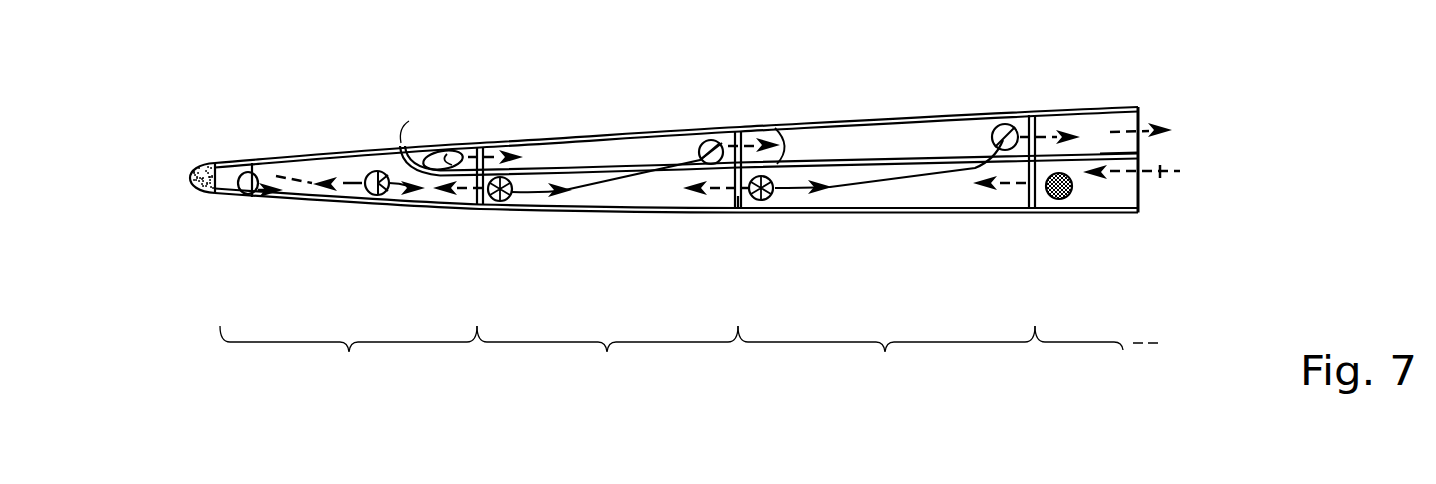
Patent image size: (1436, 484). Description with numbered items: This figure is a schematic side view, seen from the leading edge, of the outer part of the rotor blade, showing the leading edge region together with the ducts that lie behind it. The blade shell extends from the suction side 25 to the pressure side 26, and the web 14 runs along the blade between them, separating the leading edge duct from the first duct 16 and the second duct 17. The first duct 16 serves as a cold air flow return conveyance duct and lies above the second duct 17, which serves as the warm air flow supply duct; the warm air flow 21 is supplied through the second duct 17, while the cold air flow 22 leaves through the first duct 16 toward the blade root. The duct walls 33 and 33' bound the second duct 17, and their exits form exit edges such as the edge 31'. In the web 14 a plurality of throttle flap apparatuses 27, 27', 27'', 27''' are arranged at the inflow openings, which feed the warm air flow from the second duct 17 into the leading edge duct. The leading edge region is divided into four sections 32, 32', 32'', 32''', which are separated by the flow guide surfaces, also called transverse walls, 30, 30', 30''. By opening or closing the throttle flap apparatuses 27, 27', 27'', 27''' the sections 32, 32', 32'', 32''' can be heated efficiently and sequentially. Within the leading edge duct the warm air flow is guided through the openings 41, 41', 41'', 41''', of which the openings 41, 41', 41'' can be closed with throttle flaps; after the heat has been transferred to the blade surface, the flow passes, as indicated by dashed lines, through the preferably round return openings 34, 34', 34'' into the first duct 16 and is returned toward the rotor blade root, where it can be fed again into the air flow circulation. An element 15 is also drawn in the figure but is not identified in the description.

The web 14 is at (296, 193).
The spar / partition web 15 is at (921, 166).
The first duct 16 is at (892, 140).
The second duct 17 is at (950, 190).
The warm air flow 21 is at (1160, 178).
The cold air flow 22 is at (1147, 127).
The suction side 25 is at (606, 133).
The pressure side 26 is at (643, 216).
The throttle flap apparatus 27 is at (1066, 225).
The throttle flap apparatus 27' is at (745, 226).
The throttle flap apparatus 27'' is at (509, 223).
The throttle flap apparatus 27''' is at (386, 218).
The flow guide surface 30 is at (1008, 196).
The flow guide surface 30' is at (704, 204).
The flow guide surface 30'' is at (452, 208).
The exit edge 31' is at (773, 236).
The section 32 is at (1098, 356).
The section 32' is at (886, 356).
The section 32'' is at (607, 356).
The section 32''' is at (348, 356).
The duct wall 33 is at (1120, 242).
The duct wall 33' is at (1107, 101).
The opening 34 is at (989, 101).
The opening 34' is at (705, 115).
The opening 34'' is at (462, 126).
The opening 41 is at (675, 127).
The opening 41' is at (594, 134).
The opening 41'' is at (457, 188).
The opening 41''' is at (292, 210).